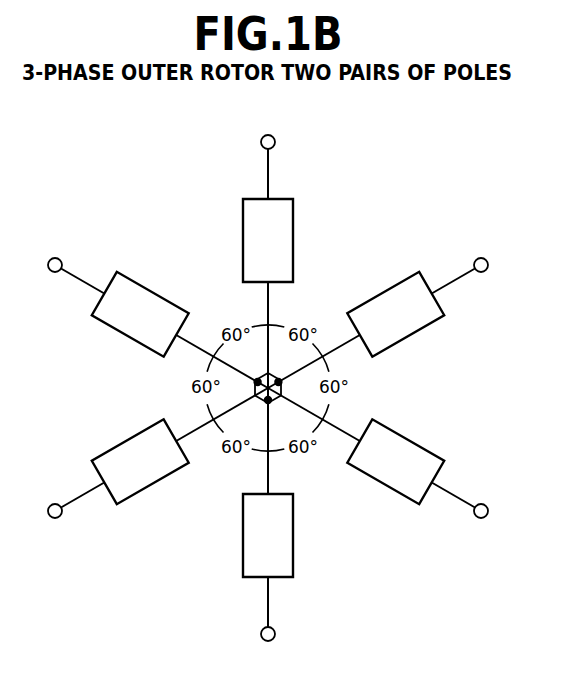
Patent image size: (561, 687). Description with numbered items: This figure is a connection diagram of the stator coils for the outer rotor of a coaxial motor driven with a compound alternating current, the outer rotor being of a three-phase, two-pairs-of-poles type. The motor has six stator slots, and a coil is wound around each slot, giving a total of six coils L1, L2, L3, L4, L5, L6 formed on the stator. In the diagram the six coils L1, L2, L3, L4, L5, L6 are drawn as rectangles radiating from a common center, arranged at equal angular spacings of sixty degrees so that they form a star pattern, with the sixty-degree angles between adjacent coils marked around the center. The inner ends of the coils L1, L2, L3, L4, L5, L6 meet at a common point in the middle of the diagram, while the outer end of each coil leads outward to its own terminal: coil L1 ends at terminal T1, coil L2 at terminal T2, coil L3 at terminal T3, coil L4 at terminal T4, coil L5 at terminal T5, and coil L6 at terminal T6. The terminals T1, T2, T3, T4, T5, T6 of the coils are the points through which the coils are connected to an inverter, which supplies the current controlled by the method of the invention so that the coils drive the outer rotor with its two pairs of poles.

The coil L1 is at (283, 293).
The coil L2 is at (356, 330).
The coil L3 is at (356, 450).
The coil L4 is at (283, 482).
The coil L5 is at (180, 449).
The coil L6 is at (180, 330).
The terminal T1 is at (267, 152).
The terminal T2 is at (474, 268).
The terminal T3 is at (471, 512).
The terminal T4 is at (267, 624).
The terminal T5 is at (65, 513).
The terminal T6 is at (65, 266).